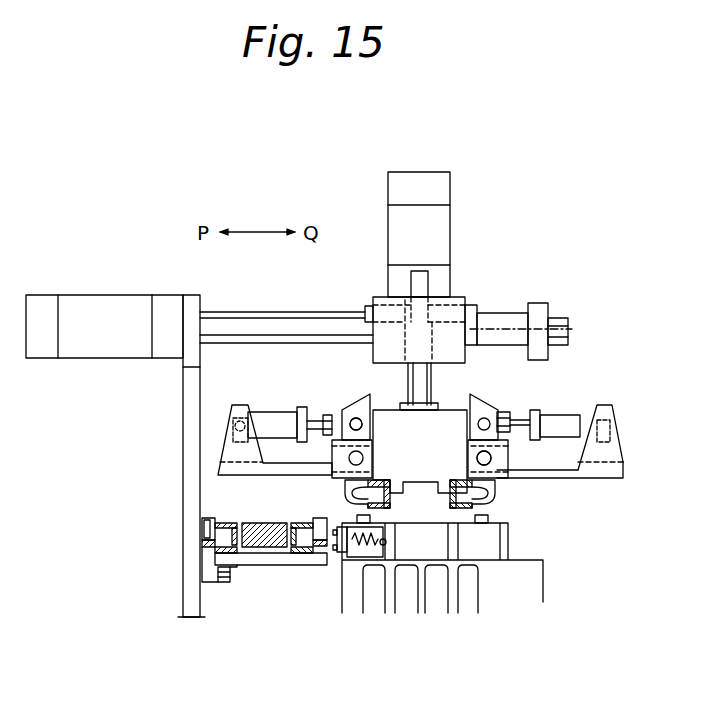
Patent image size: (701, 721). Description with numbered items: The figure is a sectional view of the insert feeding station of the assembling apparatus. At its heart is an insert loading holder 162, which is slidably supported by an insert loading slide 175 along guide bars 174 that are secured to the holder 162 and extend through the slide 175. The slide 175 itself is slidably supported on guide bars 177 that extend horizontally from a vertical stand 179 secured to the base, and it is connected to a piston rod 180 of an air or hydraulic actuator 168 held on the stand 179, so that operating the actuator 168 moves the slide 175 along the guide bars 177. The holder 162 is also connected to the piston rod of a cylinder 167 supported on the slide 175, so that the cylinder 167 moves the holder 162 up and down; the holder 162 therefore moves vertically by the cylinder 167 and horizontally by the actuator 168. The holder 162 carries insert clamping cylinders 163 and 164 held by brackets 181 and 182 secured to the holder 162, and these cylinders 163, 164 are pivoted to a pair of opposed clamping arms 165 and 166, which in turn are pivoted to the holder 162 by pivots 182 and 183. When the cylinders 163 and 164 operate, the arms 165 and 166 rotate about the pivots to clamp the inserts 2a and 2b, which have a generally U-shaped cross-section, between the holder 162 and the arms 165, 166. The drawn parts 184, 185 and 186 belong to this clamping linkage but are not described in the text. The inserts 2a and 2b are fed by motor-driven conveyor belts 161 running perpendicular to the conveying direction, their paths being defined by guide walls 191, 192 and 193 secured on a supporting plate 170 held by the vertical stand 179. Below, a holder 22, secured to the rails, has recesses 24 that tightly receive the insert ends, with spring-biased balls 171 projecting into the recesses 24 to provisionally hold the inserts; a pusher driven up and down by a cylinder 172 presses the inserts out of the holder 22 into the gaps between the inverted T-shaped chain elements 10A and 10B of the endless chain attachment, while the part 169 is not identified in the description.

The air or hydraulic cylinder 167 is at (438, 226).
The guide bars 174 is at (420, 285).
The air or hydraulic cylinder 172 is at (382, 375).
The insert loading slide 175 is at (450, 338).
The guide bars 177 is at (500, 325).
The piston rod 180 is at (265, 320).
The air or hydraulic actuator 168 is at (97, 345).
The vertical stand 179 is at (183, 422).
The cylinder base plate 184 is at (228, 448).
The insert clamping cylinder 164 is at (275, 418).
The pivot 183 is at (340, 412).
The pivot pin 186 is at (356, 410).
The right pivot arm 185 is at (500, 412).
The insert loading holder 162 is at (475, 400).
The insert clamping cylinder 163 is at (575, 416).
The bracket 181 is at (625, 468).
The bracket / pivot 182 is at (490, 458).
The clamping arm 166 is at (350, 488).
The clamping arm 165 is at (500, 490).
The holder 22 is at (415, 530).
The insert 2b is at (378, 506).
The insert 2a is at (487, 504).
The guide wall 193 is at (203, 530).
The guide wall 191 is at (318, 518).
The guide wall 192 is at (262, 547).
The supporting plate 170 is at (205, 570).
The conveyor belt 161 is at (235, 556).
The mounting table 169 is at (500, 545).
The spring-biased ball 171 is at (383, 560).
The recess 24 is at (388, 565).
The chain element 10A is at (410, 590).
The chain element 10B is at (435, 600).